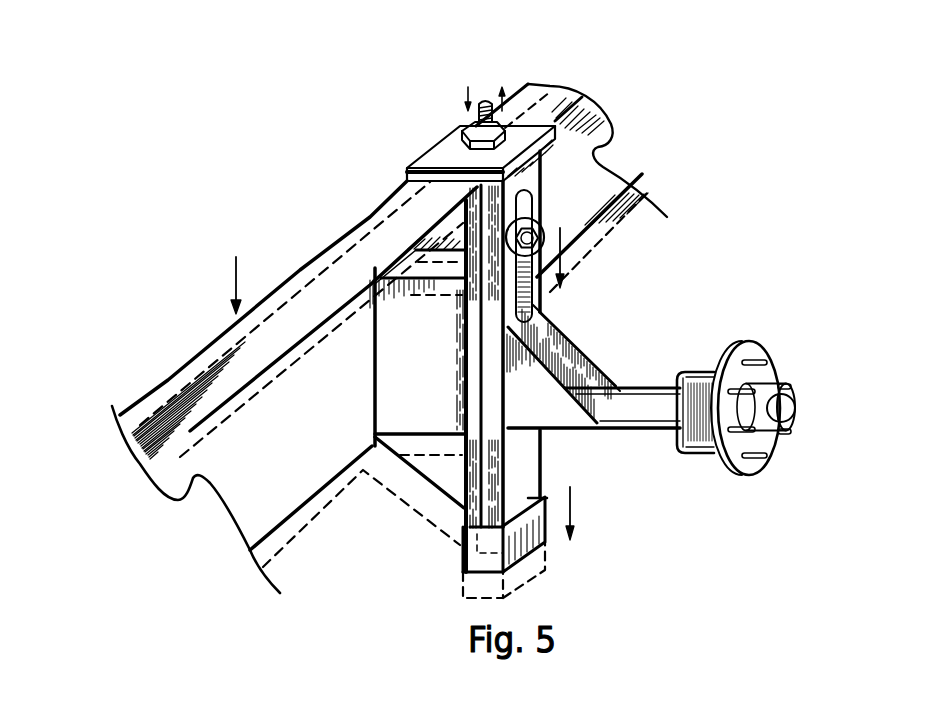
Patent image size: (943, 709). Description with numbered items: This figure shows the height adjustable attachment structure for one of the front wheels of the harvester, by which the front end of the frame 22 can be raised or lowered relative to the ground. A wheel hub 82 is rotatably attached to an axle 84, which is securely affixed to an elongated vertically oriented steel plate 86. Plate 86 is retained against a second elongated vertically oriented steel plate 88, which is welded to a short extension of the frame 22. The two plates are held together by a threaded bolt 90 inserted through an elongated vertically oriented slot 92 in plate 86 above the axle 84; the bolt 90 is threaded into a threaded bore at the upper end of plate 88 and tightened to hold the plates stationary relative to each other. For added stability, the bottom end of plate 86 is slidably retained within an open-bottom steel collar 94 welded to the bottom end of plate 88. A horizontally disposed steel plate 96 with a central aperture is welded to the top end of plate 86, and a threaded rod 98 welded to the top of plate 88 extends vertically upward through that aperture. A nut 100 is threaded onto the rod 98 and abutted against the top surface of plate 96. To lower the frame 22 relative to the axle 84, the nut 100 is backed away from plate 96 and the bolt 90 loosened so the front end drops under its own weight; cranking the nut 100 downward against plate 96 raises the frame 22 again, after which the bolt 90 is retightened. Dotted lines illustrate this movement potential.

The frame 22 is at (380, 273).
The wheel hub 82 is at (752, 343).
The axle 84 is at (658, 430).
The elongated vertically oriented steel plate 86 is at (527, 456).
The second elongated vertically oriented steel plate 88 is at (460, 530).
The threaded bolt 90 is at (538, 238).
The elongated vertically oriented slot 92 is at (537, 197).
The open-bottom steel collar 94 is at (546, 541).
The horizontally disposed steel plate 96 is at (557, 104).
The threaded rod 98 is at (487, 103).
The nut 100 is at (462, 130).